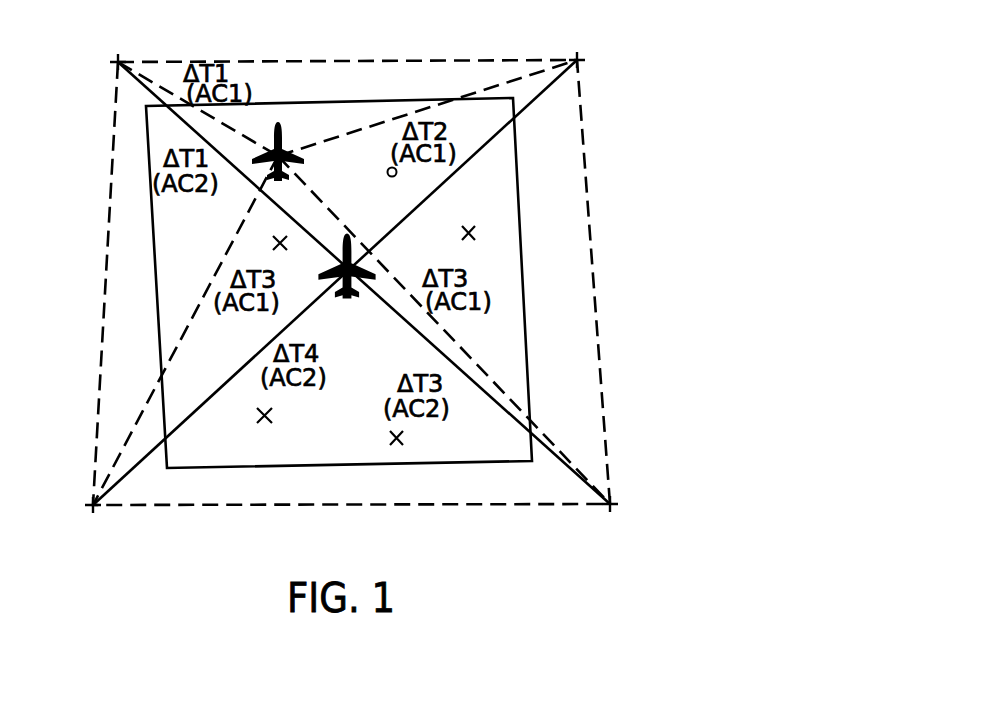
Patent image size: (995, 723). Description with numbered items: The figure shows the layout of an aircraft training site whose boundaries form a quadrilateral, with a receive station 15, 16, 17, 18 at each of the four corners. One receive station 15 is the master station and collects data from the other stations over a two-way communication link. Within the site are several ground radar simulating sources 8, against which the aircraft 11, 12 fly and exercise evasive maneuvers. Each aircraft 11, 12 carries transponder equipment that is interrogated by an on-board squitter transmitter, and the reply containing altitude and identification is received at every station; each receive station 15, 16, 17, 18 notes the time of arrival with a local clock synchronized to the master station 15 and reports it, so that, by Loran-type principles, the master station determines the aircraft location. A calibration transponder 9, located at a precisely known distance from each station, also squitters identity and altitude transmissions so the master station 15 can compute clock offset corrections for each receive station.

The ground radar simulating source 8 is at (286, 248).
The calibration transponder 9 is at (388, 175).
The aircraft 11 is at (352, 290).
The aircraft 12 is at (287, 146).
The receive station (master station) 15 is at (115, 65).
The receive station 16 is at (580, 63).
The receive station 17 is at (91, 503).
The receive station 18 is at (612, 502).